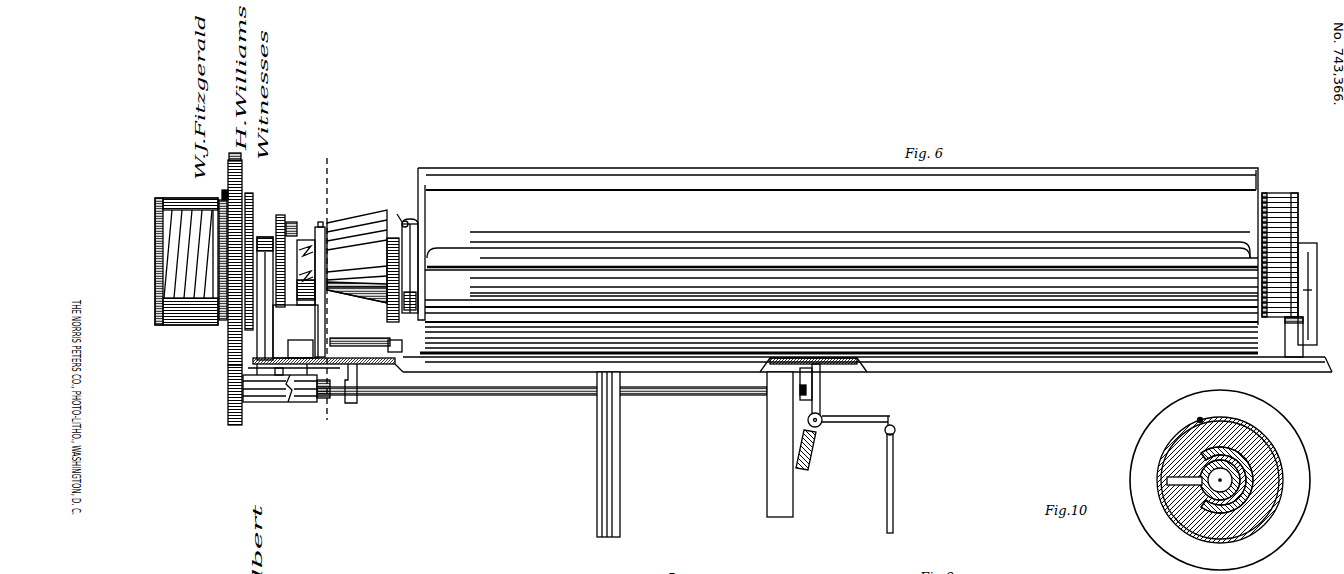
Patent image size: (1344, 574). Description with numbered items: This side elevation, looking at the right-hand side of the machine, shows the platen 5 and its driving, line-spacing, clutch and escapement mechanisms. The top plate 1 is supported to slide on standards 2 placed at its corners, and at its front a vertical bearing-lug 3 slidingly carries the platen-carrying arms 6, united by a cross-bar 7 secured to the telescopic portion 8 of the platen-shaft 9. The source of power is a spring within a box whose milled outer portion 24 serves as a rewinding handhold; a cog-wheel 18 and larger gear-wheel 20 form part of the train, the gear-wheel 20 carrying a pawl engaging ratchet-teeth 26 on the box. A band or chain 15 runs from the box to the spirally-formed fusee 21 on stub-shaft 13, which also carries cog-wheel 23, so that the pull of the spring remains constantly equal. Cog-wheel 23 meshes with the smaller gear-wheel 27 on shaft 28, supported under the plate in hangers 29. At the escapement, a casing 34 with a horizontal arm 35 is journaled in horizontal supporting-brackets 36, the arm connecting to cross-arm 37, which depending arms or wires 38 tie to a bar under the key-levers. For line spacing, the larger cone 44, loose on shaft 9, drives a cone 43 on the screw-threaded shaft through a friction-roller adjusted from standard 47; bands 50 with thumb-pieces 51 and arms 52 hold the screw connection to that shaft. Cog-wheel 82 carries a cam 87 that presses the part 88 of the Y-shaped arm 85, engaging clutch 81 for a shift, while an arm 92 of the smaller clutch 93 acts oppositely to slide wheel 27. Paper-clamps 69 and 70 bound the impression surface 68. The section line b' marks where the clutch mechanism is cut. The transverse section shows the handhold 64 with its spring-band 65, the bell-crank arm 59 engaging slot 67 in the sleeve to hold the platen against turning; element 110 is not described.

In FIG. 6, the top plate 1 is at (985, 374).
In FIG. 6, the standards 2 is at (620, 483).
In FIG. 6, the vertical bearing-lug 3 is at (1303, 352).
In FIG. 6, the platen 5 is at (1052, 383).
In FIG. 10, the platen 5 is at (1220, 480).
In FIG. 6, the platen-carrying arms 6 is at (447, 340).
In FIG. 10, the platen-carrying arms 6 is at (1200, 419).
In FIG. 6, the cross-bar 7 is at (1312, 300).
In FIG. 6, the telescopic portion of the platen-shaft 8 is at (1303, 249).
In FIG. 6, the platen-shaft 9 is at (400, 214).
In FIG. 6, the stub-shaft 13 is at (262, 237).
In FIG. 6, the band or chain 15 is at (218, 201).
In FIG. 6, the cog-wheel 18 is at (254, 200).
In FIG. 6, the gear-wheel 20 is at (242, 160).
In FIG. 6, the fusee 21 is at (183, 232).
In FIG. 6, the cog-wheel 23 is at (228, 353).
In FIG. 6, the outer portion of the spring-box 24 is at (157, 341).
In FIG. 6, the ratchet-teeth 26 is at (226, 194).
In FIG. 6, the gear-wheel 27 is at (229, 400).
In FIG. 6, the shaft 28 is at (542, 402).
In FIG. 6, the hangers 29 is at (351, 405).
In FIG. 6, the casing 34 is at (808, 421).
In FIG. 6, the horizontal arm 35 is at (852, 423).
In FIG. 6, the horizontal supporting-brackets 36 is at (810, 455).
In FIG. 6, the cross-arm 37 is at (896, 427).
In FIG. 6, the depending arms or wires 38 is at (902, 483).
In FIG. 6, the cone 43 is at (346, 349).
In FIG. 6, the larger cone 44 is at (363, 265).
In FIG. 6, the standard 47 is at (396, 352).
In FIG. 6, the bands 50 is at (418, 242).
In FIG. 6, the thumb-pieces 51 is at (419, 223).
In FIG. 6, the arms 52 is at (418, 297).
In FIG. 10, the bell-crank lever arm 59 is at (1165, 479).
In FIG. 6, the handhold 64 is at (1298, 202).
In FIG. 6, the spring-band 65 is at (1282, 198).
In FIG. 10, the spring-band 65 is at (1162, 443).
In FIG. 10, the slot 67 is at (1196, 488).
In FIG. 6, the impression surface 68 is at (864, 251).
In FIG. 6, the fixed clamp 69 is at (522, 176).
In FIG. 6, the movable clamp 70 is at (488, 256).
In FIG. 6, the clutch 81 is at (299, 303).
In FIG. 6, the cog-wheel 82 is at (284, 215).
In FIG. 6, the Y-shaped arm 85 is at (324, 227).
In FIG. 6, the cam 87 is at (292, 223).
In FIG. 6, the part of the Y-shaped arm 88 is at (315, 352).
In FIG. 6, the arm of the smaller clutch 92 is at (275, 403).
In FIG. 6, the smaller clutch 93 is at (301, 403).
In FIG. 6, the housing 110 is at (294, 299).
In FIG. 6, the section line b' b' is at (327, 289).